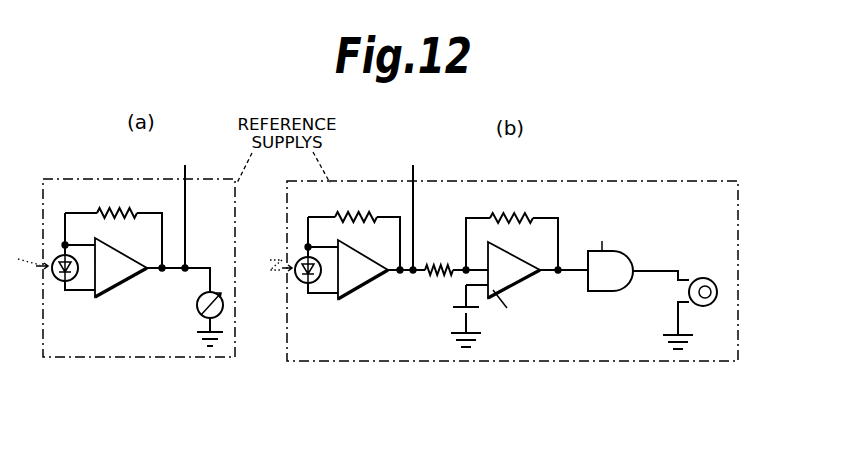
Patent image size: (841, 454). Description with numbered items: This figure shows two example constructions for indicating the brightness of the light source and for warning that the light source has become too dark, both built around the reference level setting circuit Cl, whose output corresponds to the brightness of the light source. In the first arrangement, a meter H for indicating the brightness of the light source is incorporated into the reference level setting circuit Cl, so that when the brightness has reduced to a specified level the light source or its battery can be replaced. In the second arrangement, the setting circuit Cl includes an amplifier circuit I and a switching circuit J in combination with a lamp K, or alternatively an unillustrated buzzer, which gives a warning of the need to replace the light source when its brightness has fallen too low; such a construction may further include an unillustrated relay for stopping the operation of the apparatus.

The reference level setting circuit Cl is at (352, 180).
The meter H is at (197, 305).
The amplifier circuit I is at (523, 280).
The switching circuit J is at (605, 249).
The lamp K is at (690, 278).